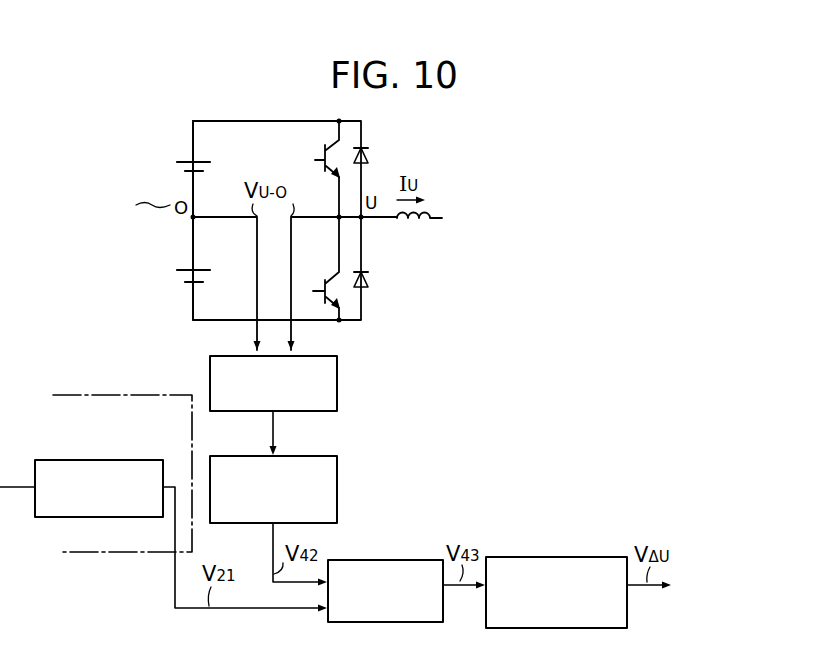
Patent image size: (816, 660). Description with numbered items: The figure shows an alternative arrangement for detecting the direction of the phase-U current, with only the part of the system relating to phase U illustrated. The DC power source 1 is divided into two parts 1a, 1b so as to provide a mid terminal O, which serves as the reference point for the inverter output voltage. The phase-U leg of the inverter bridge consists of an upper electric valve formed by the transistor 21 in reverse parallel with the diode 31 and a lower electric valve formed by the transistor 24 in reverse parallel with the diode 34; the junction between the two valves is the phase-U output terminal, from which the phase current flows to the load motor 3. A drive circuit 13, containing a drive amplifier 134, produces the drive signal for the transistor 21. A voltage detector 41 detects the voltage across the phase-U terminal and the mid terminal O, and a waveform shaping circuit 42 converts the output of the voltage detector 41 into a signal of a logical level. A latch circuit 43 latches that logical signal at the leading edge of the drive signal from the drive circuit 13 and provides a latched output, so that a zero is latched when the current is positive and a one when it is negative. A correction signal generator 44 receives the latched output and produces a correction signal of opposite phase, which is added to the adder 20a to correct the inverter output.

The DC power source 1 is at (159, 220).
The first part of DC power source 1a is at (199, 162).
The second part of DC power source 1b is at (199, 270).
The transistor 21 is at (315, 160).
The transistor 24 is at (313, 291).
The diode 31 is at (370, 160).
The diode 34 is at (370, 281).
The load motor 3 is at (438, 215).
The drive circuit 13 is at (68, 393).
The drive amplifier 134 is at (112, 459).
The voltage detector 41 is at (337, 392).
The waveform shaping circuit 42 is at (337, 496).
The latch circuit 43 is at (412, 559).
The correction signal generator 44 is at (596, 556).
The adder 20a is at (681, 590).